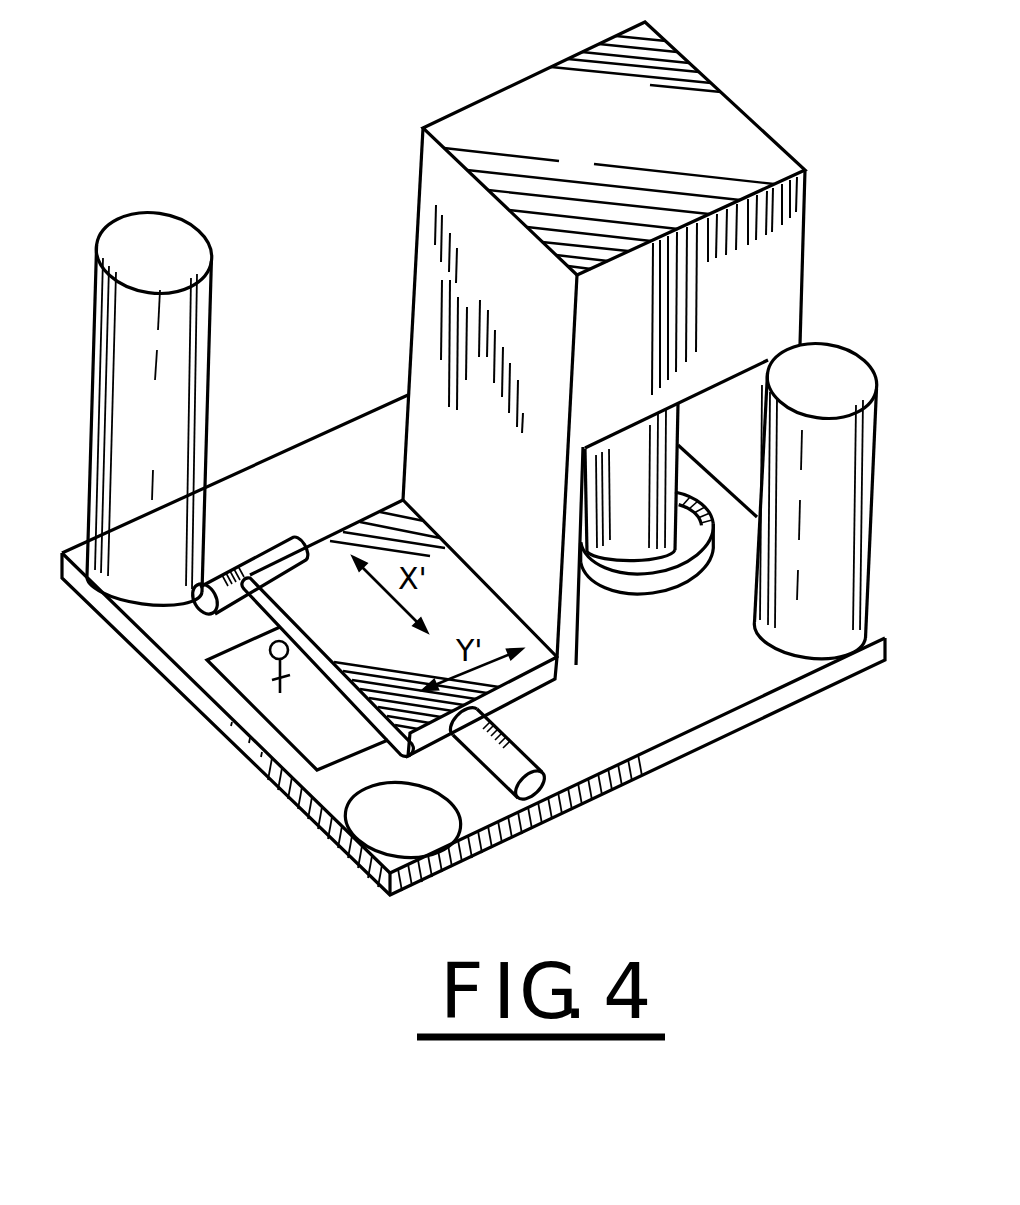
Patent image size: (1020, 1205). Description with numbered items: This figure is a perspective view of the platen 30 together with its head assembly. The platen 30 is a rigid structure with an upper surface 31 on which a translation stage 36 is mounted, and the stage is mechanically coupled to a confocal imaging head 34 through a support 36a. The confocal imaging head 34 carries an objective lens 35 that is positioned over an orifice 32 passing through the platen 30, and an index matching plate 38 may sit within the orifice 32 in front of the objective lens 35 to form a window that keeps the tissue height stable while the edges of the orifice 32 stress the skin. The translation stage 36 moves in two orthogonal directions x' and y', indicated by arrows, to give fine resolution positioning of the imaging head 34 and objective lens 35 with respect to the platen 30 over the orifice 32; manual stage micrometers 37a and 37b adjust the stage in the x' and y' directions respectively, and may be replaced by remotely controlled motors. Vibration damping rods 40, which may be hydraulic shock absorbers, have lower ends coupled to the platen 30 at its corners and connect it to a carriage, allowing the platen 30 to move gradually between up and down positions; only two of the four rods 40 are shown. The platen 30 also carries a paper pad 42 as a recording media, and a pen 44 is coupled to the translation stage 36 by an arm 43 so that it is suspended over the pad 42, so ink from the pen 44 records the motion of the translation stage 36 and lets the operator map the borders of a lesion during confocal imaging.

The platen 30 is at (737, 831).
The upper surface 31 is at (172, 636).
The orifice 32 is at (637, 593).
The confocal imaging head 34 is at (757, 328).
The objective lens 35 is at (680, 427).
The translation stage 36 is at (524, 701).
The support 36a is at (403, 420).
The manual stage micrometer 37a is at (496, 790).
The manual stage micrometer 37b is at (250, 562).
The index matching plate 38 is at (677, 573).
The vibration damping rods 40 is at (212, 337).
The paper pad 42 is at (345, 741).
The arm 43 is at (290, 672).
The pen 44 is at (283, 640).